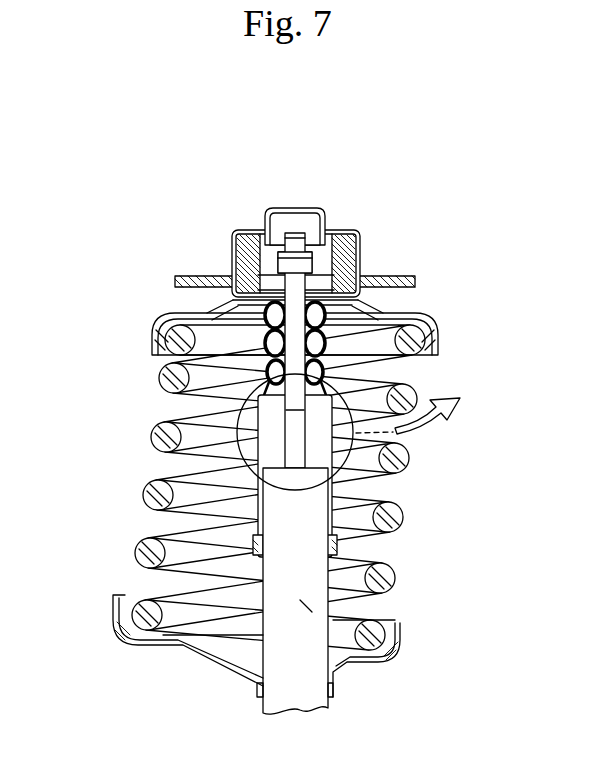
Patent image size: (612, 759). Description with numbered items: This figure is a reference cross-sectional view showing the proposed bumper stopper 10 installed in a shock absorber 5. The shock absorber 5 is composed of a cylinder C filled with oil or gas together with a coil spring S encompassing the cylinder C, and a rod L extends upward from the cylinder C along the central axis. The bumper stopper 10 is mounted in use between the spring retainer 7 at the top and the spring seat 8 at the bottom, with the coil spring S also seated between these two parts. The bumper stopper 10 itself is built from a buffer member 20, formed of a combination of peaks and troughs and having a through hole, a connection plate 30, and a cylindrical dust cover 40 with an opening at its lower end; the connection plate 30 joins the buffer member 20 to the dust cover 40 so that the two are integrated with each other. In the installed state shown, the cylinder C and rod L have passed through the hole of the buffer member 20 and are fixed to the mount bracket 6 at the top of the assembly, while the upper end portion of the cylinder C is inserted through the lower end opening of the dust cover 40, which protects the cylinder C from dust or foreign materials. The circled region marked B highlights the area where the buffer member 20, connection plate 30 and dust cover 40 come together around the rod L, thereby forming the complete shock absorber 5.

The shock absorber 5 is at (290, 178).
The mount bracket 6 is at (335, 233).
The spring retainer 7 is at (165, 312).
The bumper stopper 10 is at (340, 346).
The buffer member 20 is at (258, 343).
The connection plate 30 is at (322, 378).
The dust cover 40 is at (325, 482).
The spring seat 8 is at (372, 662).
The coil spring S is at (150, 483).
The rod L is at (292, 411).
The cylinder C is at (313, 608).
The detail region B is at (358, 432).